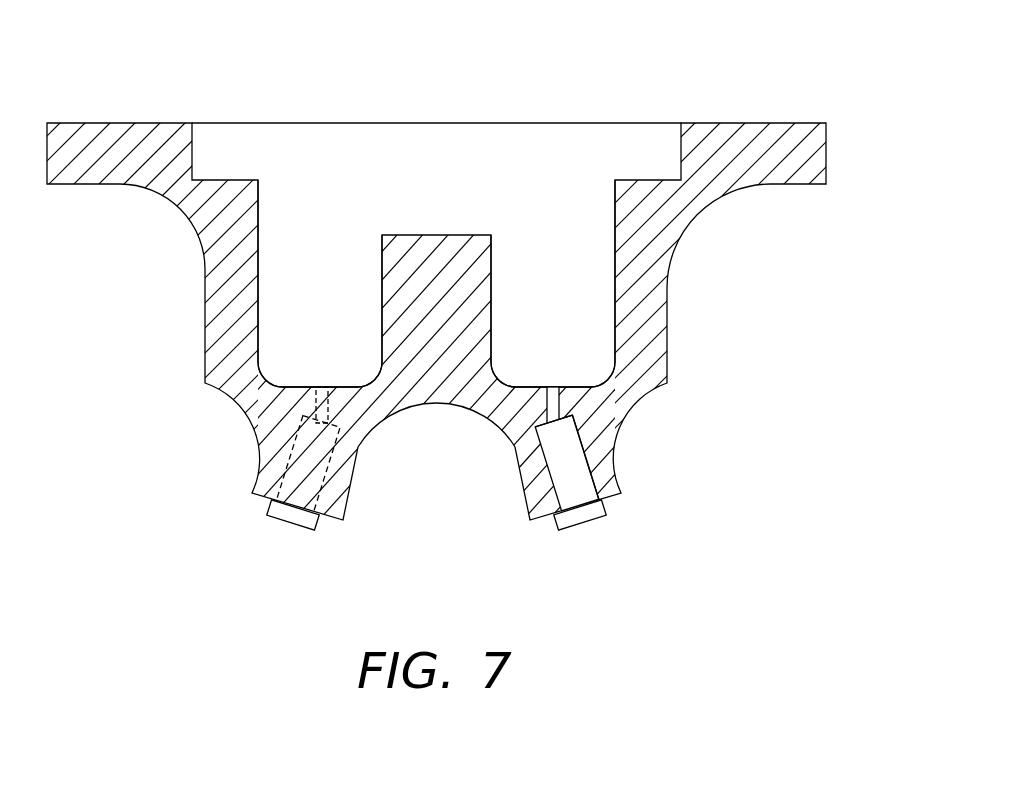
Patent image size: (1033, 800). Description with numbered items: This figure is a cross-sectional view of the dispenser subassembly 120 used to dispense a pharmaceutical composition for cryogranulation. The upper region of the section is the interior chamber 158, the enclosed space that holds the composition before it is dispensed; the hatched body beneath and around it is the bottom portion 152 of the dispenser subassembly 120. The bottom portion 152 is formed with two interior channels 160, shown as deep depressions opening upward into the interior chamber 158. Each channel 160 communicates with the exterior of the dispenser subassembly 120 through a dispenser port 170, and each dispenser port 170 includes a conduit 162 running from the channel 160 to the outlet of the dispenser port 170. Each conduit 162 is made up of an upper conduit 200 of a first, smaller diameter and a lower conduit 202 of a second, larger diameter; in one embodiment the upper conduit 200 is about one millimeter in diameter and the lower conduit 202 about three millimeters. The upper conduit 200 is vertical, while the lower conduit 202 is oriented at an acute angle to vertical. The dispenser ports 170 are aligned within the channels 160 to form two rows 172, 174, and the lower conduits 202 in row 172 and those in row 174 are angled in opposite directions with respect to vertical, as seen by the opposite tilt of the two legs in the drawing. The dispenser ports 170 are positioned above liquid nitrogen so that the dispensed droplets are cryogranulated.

The dispenser subassembly 120 is at (516, 275).
The bottom portion 152 is at (203, 317).
The interior chamber 158 is at (470, 148).
The interior channel 160 is at (337, 293).
The conduit 162 is at (316, 384).
The dispenser port 170 is at (268, 510).
The row of dispenser ports 172 is at (624, 492).
The row of dispenser ports 174 is at (250, 494).
The upper conduit 200 is at (560, 405).
The lower conduit 202 is at (600, 470).